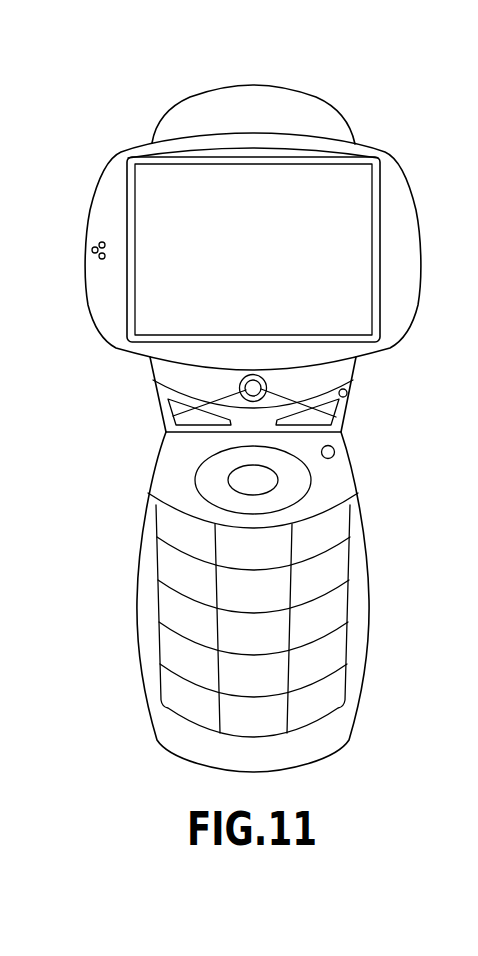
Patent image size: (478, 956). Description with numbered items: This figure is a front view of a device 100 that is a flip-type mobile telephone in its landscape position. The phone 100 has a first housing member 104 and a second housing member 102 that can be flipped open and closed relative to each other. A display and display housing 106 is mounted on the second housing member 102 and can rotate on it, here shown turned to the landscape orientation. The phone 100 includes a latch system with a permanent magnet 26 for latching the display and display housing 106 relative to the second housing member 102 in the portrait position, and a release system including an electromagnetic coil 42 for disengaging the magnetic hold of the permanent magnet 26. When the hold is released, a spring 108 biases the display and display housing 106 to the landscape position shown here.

The device 100 is at (185, 67).
The display and display housing 106 is at (99, 188).
The spring 108 is at (308, 213).
The second housing member 102 is at (353, 377).
The permanent magnet 26 is at (168, 414).
The electromagnetic coil 42 is at (342, 417).
The first housing member 104 is at (369, 598).